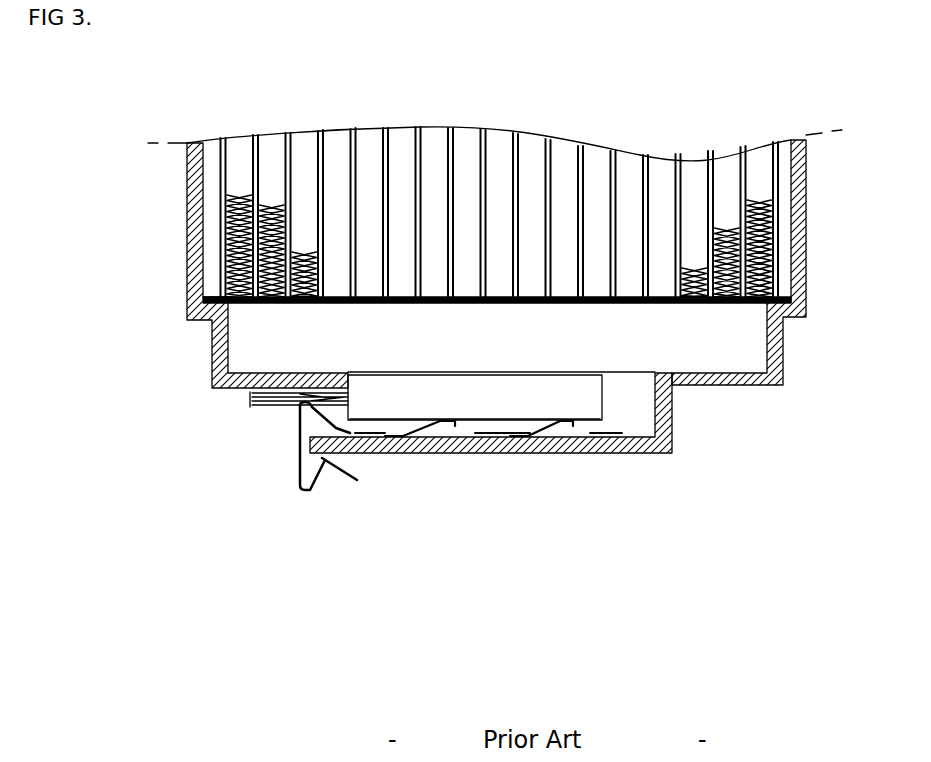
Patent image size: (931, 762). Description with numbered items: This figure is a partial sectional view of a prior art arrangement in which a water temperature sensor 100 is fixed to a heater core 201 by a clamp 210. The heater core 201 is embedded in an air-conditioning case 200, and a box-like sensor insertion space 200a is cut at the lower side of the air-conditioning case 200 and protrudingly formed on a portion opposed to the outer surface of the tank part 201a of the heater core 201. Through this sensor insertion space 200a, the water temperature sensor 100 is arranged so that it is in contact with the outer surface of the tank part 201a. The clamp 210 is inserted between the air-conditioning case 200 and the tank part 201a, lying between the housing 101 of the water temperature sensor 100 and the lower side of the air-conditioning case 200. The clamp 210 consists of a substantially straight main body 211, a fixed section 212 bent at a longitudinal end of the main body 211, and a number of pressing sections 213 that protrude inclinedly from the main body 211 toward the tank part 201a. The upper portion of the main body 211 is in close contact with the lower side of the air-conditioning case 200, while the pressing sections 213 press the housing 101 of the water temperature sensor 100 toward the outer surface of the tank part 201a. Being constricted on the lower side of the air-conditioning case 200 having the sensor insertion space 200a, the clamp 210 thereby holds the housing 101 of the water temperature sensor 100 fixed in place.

The water temperature sensor 100 is at (609, 411).
The housing 101 is at (462, 407).
The air-conditioning case 200 is at (672, 420).
The sensor insertion space 200a is at (633, 398).
The heater core 201 is at (433, 147).
The tank part 201a is at (770, 352).
The clamp 210 is at (405, 473).
The main body 211 is at (387, 455).
The fixed section 212 is at (298, 433).
The pressing sections 213 is at (485, 468).